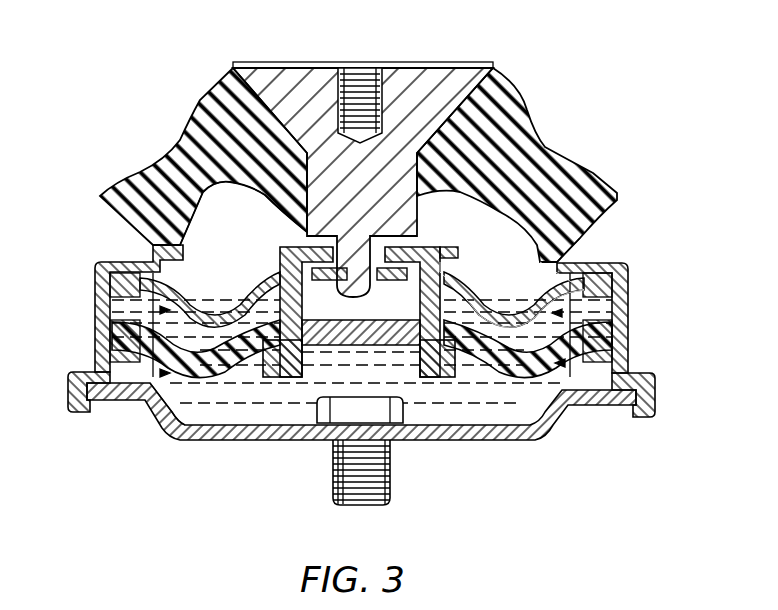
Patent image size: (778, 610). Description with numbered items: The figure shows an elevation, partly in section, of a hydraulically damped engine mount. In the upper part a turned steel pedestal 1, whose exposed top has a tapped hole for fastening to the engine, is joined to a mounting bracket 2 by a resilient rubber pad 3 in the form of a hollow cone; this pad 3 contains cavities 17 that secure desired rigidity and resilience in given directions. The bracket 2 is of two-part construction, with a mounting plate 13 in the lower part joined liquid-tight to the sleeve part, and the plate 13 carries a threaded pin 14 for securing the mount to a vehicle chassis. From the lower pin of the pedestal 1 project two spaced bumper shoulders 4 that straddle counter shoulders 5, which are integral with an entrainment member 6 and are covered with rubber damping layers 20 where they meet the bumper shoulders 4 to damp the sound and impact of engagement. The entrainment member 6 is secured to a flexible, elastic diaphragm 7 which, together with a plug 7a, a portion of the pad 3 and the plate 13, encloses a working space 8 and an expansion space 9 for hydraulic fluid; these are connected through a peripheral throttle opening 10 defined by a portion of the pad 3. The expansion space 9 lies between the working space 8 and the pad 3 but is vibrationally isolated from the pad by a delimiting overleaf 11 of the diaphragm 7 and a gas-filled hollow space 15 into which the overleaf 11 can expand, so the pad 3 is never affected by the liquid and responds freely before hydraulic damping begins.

The pedestal 1 is at (272, 80).
The cavities 17 is at (173, 153).
The resilient rubber pad 3 is at (530, 170).
The delimiting overleaf 11 is at (570, 252).
The mounting bracket 2 is at (618, 282).
The peripheral throttle opening 10 is at (152, 307).
The expansion space 9 is at (218, 332).
The rubber damping layer 20 is at (280, 262).
The bumper shoulders 4 is at (307, 246).
The counter shoulders 5 is at (428, 247).
The entrainment member 6 is at (440, 250).
The gas-filled hollow space 15 is at (520, 288).
The plug 7a is at (320, 336).
The diaphragm 7 is at (523, 375).
The working space 8 is at (470, 397).
The mounting plate 13 is at (203, 427).
The threaded pin 14 is at (335, 477).